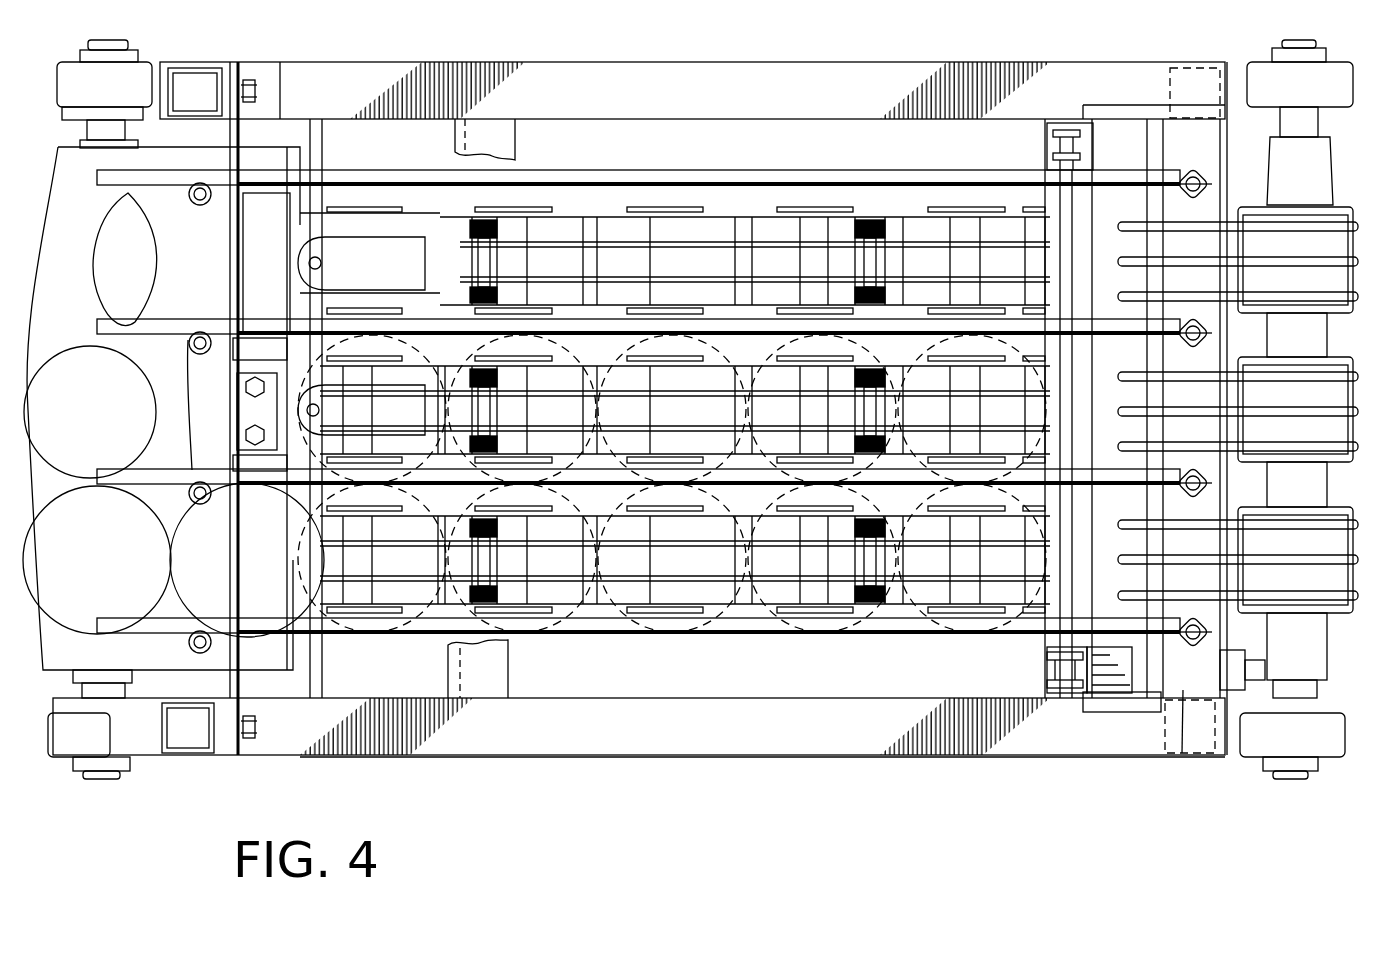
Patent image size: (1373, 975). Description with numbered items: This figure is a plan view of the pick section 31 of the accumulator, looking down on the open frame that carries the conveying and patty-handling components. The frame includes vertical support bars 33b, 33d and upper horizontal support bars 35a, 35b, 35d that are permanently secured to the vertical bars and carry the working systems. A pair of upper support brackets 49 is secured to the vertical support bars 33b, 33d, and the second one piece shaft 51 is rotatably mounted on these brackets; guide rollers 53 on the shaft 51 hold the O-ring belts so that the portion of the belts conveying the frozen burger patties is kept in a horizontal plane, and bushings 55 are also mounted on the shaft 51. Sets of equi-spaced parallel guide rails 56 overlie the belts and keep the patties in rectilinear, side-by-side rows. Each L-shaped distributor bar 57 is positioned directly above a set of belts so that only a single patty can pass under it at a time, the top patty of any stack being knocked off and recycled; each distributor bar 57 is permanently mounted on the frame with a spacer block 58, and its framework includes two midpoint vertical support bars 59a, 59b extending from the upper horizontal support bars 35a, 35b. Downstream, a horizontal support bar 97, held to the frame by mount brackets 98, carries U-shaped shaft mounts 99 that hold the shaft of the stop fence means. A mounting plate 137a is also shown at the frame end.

The pick section 31 is at (523, 765).
The vertical support bar 33b is at (1166, 757).
The vertical support bar 33d is at (1185, 90).
The upper horizontal support bar 35a is at (768, 741).
The upper horizontal support bar 35b is at (745, 109).
The upper horizontal support bar 35d is at (1182, 753).
The upper support bracket 49 is at (1340, 108).
The second one piece shaft 51 is at (1297, 693).
The guide roller 53 is at (1312, 432).
The bushing 55 is at (1288, 96).
The guide rail 56 is at (977, 178).
The L-shaped distributor bar 57 is at (240, 118).
The spacer block 58 is at (228, 73).
The midpoint vertical support bar 59a is at (193, 745).
The midpoint vertical support bar 59b is at (190, 88).
The horizontal support bar 97 is at (1138, 516).
The mount bracket 98 is at (1088, 700).
The U-shaped shaft mount 99 is at (1047, 688).
The mounting plate 137a is at (1155, 712).